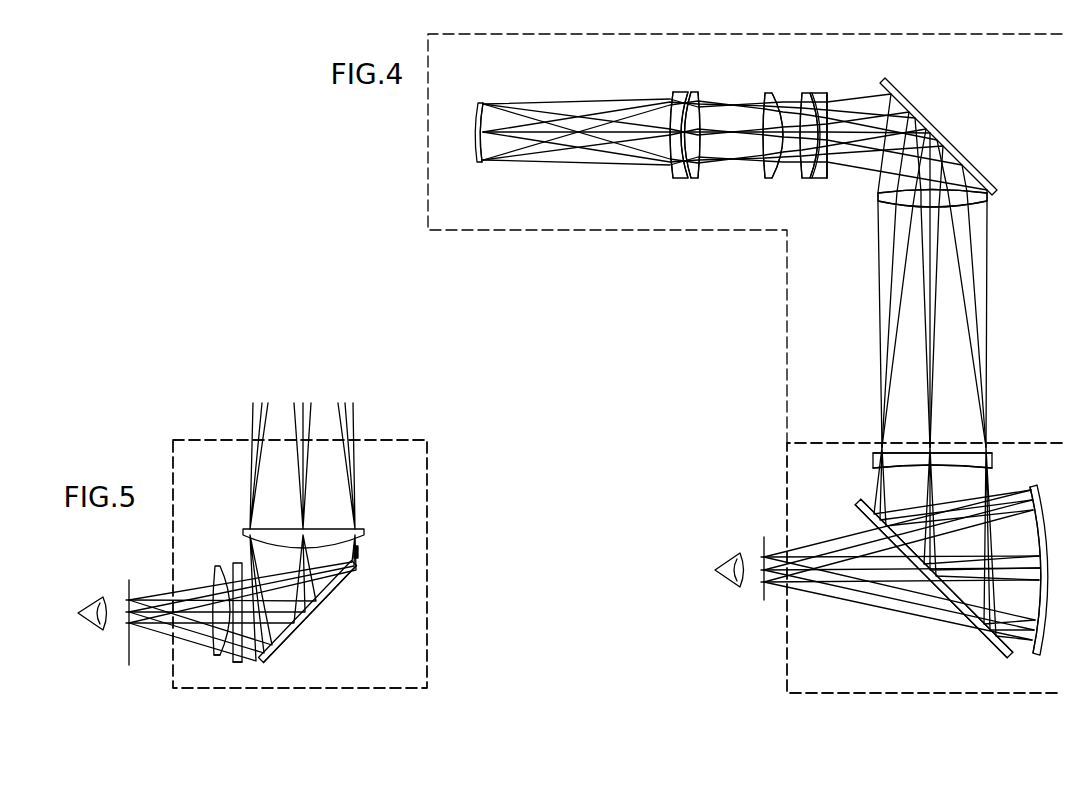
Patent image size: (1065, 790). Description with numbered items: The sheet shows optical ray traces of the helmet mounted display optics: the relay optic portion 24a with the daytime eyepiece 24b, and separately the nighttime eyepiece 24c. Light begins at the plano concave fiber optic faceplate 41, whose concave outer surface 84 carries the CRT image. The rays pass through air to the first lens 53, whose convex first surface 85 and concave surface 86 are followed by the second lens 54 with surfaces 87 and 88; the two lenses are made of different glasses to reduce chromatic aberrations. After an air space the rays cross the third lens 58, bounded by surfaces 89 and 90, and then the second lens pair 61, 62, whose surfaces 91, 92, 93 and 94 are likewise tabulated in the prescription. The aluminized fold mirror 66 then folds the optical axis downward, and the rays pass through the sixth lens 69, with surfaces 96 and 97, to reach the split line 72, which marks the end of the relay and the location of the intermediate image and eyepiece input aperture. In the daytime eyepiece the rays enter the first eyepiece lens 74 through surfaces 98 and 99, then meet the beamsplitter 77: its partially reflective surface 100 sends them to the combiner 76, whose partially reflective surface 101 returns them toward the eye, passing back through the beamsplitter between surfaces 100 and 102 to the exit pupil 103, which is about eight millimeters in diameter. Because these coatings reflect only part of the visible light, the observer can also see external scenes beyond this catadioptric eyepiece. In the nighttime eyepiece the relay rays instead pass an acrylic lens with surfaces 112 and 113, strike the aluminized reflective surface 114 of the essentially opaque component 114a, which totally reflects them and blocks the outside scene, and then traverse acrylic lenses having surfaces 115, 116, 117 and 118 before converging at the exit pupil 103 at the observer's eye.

In FIG. 4, the relay optic portion 24a is at (745, 238).
In FIG. 4, the daytime eyepiece 24b is at (877, 551).
In FIG. 5, the nighttime eyepiece 24c is at (259, 539).
In FIG. 4, the CRT faceplate 41 is at (473, 132).
In FIG. 4, the outer surface 84 is at (486, 110).
In FIG. 4, the first lens 53 is at (681, 190).
In FIG. 4, the second lens 54 is at (694, 182).
In FIG. 4, the first surface 85 is at (671, 168).
In FIG. 4, the lens surface 86 is at (668, 112).
In FIG. 4, the lens surface 87 is at (699, 127).
In FIG. 4, the lens surface 88 is at (699, 172).
In FIG. 4, the third lens 58 is at (771, 178).
In FIG. 4, the lens surface 89 is at (768, 94).
In FIG. 4, the lens surface 90 is at (773, 94).
In FIG. 4, the lens of second lens pair 61 is at (808, 181).
In FIG. 4, the lens of second lens pair 62 is at (819, 181).
In FIG. 4, the lens surface 91 is at (802, 176).
In FIG. 4, the lens surface 92 is at (813, 96).
In FIG. 4, the lens surface 93 is at (830, 113).
In FIG. 4, the lens surface 94 is at (830, 170).
In FIG. 4, the fold mirror 66 is at (903, 87).
In FIG. 4, the sixth lens 69 is at (986, 197).
In FIG. 4, the lens surface 96 is at (878, 193).
In FIG. 4, the lens surface 97 is at (977, 208).
In FIG. 4, the split line 72 is at (924, 529).
In FIG. 5, the split line 72 is at (300, 526).
In FIG. 4, the first eyepiece lens 74 is at (995, 461).
In FIG. 4, the lens surface 98 is at (972, 452).
In FIG. 4, the lens surface 99 is at (950, 468).
In FIG. 4, the beamsplitter 77 is at (861, 501).
In FIG. 4, the partially reflective surface 100 is at (872, 507).
In FIG. 4, the beamsplitter surface 102 is at (863, 516).
In FIG. 4, the combiner 76 is at (1034, 655).
In FIG. 4, the partially reflective surface 101 is at (1031, 515).
In FIG. 4, the exit pupil 103 is at (765, 537).
In FIG. 5, the exit pupil 103 is at (130, 580).
In FIG. 5, the lens surface 112 is at (265, 529).
In FIG. 5, the lens surface 113 is at (359, 553).
In FIG. 5, the reflective surface 114 is at (327, 582).
In FIG. 5, the reflective component 114a is at (293, 633).
In FIG. 5, the lens surface 115 is at (242, 564).
In FIG. 5, the lens surface 116 is at (232, 565).
In FIG. 5, the lens surface 117 is at (238, 662).
In FIG. 5, the lens surface 118 is at (217, 655).